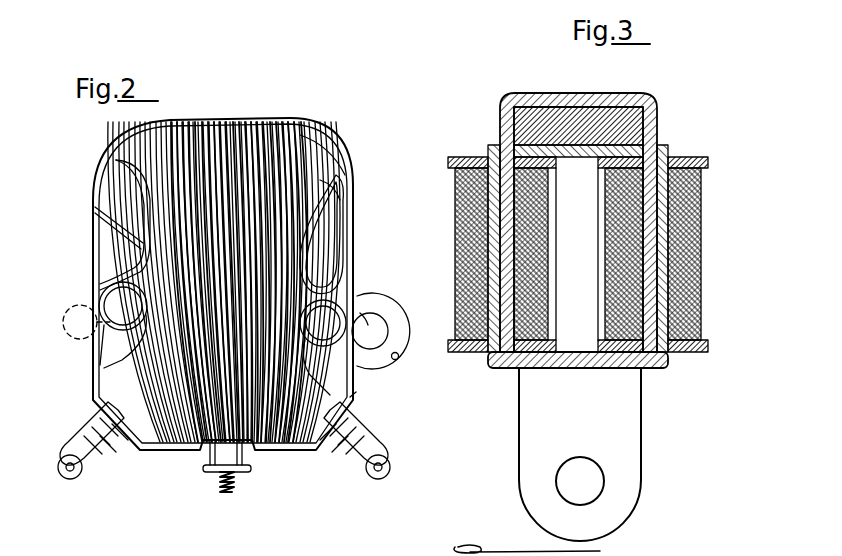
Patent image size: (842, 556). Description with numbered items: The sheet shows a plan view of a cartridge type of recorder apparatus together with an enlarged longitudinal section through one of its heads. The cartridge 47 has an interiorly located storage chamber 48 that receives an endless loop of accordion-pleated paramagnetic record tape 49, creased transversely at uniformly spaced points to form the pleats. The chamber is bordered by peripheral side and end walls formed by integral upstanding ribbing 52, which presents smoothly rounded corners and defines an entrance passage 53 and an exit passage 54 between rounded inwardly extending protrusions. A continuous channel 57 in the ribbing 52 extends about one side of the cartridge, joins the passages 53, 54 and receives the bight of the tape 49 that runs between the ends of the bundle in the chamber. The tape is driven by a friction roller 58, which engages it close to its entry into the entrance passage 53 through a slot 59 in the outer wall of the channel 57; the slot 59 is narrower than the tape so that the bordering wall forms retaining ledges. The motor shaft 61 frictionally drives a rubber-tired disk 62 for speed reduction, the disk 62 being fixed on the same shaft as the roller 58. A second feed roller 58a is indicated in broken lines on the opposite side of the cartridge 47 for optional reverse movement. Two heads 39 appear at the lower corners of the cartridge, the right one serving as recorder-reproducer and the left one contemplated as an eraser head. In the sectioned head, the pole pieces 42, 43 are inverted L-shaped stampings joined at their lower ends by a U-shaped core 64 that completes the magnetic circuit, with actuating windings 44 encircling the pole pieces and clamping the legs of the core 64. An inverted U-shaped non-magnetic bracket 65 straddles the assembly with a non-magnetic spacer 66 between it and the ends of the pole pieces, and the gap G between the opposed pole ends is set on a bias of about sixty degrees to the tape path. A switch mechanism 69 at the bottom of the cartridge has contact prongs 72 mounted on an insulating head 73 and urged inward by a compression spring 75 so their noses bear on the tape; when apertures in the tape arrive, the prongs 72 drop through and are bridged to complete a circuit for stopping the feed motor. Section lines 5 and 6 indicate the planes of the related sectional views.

In FIG. 2, the cartridge 47 is at (298, 118).
In FIG. 2, the storage chamber 48 is at (322, 178).
In FIG. 2, the record tape 49 is at (332, 184).
In FIG. 2, the ribbing 52 is at (104, 258).
In FIG. 2, the entrance passage 53 is at (305, 270).
In FIG. 2, the exit passage 54 is at (123, 325).
In FIG. 2, the section line 5- 5 is at (346, 331).
In FIG. 2, the section line 6- 6 is at (303, 404).
In FIG. 2, the channel 57 is at (358, 393).
In FIG. 2, the friction roller 58 is at (373, 352).
In FIG. 2, the second feed roller 58a is at (82, 310).
In FIG. 2, the slot 59 is at (369, 308).
In FIG. 2, the motor shaft 61 is at (398, 358).
In FIG. 2, the disk 62 is at (380, 305).
In FIG. 2, the head 39 is at (62, 443).
In FIG. 2, the actuating windings 44 is at (88, 426).
In FIG. 3, the actuating windings 44 is at (462, 203).
In FIG. 2, the bracket 65 is at (76, 475).
In FIG. 3, the bracket 65 is at (578, 165).
In FIG. 2, the switch mechanism 69 is at (206, 470).
In FIG. 2, the contact prongs 72 is at (208, 462).
In FIG. 2, the insulating head 73 is at (246, 472).
In FIG. 2, the compression spring 75 is at (238, 490).
In FIG. 3, the spacer 66 is at (527, 110).
In FIG. 3, the pole piece 42 is at (556, 96).
In FIG. 3, the gap G is at (578, 100).
In FIG. 3, the pole piece 43 is at (612, 96).
In FIG. 3, the U-shaped core 64 is at (652, 368).